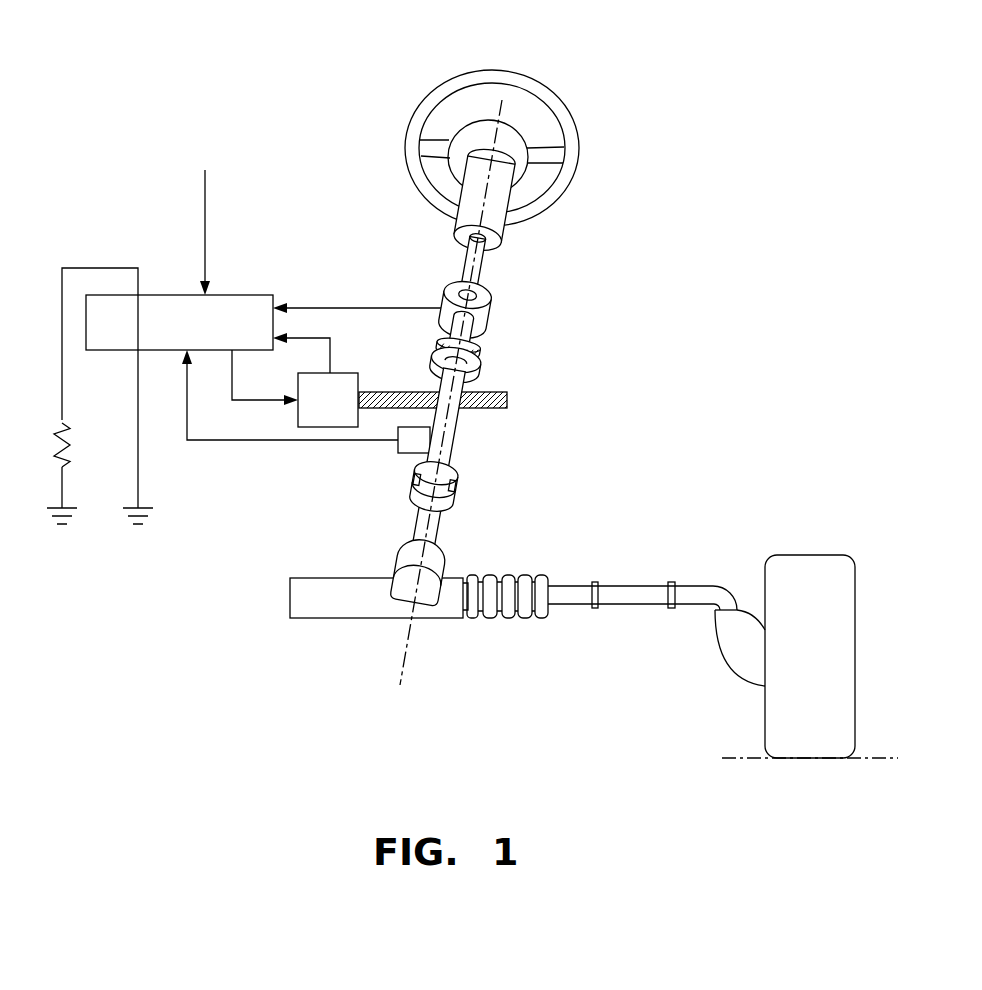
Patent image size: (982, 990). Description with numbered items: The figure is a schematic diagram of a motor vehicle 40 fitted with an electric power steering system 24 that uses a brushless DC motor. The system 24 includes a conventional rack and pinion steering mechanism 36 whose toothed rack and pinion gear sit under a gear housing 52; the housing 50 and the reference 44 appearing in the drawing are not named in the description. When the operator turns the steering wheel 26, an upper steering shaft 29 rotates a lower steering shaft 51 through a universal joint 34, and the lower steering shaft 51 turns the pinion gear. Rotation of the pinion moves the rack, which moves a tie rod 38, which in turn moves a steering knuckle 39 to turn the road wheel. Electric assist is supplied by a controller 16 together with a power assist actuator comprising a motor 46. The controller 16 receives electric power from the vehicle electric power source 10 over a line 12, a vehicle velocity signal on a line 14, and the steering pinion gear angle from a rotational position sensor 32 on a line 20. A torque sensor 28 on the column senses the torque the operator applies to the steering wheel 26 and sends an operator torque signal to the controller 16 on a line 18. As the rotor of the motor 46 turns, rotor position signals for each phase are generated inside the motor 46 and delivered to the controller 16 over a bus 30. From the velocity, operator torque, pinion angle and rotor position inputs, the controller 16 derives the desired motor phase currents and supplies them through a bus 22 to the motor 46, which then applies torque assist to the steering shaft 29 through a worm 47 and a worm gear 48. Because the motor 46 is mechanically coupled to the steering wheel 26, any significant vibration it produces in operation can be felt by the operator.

The vehicle electric power source 10 is at (63, 420).
The line 12 is at (82, 268).
The line 14 is at (205, 215).
The controller 16 is at (173, 302).
The line 18 is at (333, 307).
The line 20 is at (203, 442).
The bus 22 is at (248, 402).
The electric power steering system 24 is at (655, 280).
The steering wheel 26 is at (547, 98).
The torque sensor 28 is at (447, 298).
The upper steering shaft 29 is at (480, 254).
The bus 30 is at (330, 344).
The rotational position sensor 32 is at (400, 450).
The universal joint 34 is at (455, 487).
The rack and pinion steering mechanism 36 is at (510, 634).
The tie rod 38 is at (628, 595).
The steering knuckle 39 is at (747, 660).
The motor vehicle 40 is at (728, 420).
The road surface 44 is at (868, 760).
The motor 46 is at (354, 374).
The worm 47 is at (493, 399).
The worm gear 48 is at (475, 367).
The rack housing 50 is at (340, 608).
The lower steering shaft 51 is at (430, 535).
The gear housing 52 is at (405, 560).